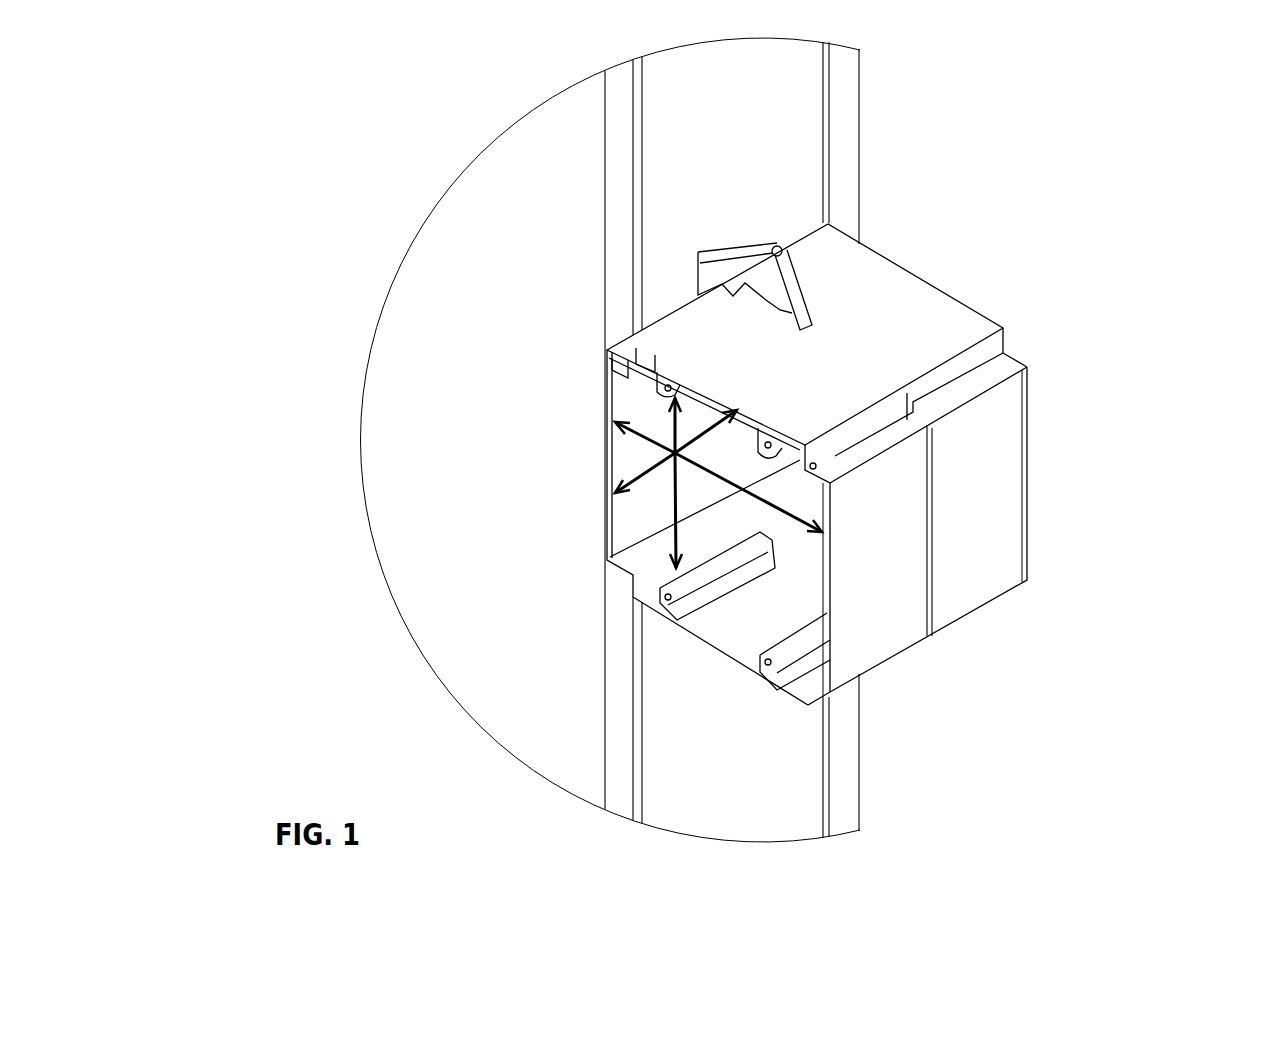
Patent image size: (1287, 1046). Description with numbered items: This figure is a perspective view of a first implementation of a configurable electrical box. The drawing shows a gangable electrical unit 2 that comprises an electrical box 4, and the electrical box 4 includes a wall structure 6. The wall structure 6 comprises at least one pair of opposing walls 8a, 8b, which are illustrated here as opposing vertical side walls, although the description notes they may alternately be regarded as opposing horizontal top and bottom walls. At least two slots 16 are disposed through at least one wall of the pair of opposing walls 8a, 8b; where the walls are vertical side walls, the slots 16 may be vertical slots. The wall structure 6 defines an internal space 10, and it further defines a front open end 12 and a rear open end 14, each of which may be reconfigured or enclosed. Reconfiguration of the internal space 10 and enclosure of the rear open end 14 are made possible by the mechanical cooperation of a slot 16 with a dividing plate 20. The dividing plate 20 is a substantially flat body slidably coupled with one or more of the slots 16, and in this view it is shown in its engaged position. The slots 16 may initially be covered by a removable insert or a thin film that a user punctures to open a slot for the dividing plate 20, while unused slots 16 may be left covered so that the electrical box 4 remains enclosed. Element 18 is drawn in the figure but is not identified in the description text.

The gangable electrical unit 2 is at (957, 678).
The electrical box 4 is at (885, 252).
The wall structure 6 is at (1022, 313).
The opposing wall 8a is at (627, 390).
The opposing wall 8b is at (885, 630).
The internal space 10 is at (675, 453).
The front open end 12 is at (620, 533).
The rear open end 14 is at (970, 287).
The slot 16 is at (928, 557).
The clip 18 is at (722, 272).
The dividing plate 20 is at (1023, 410).